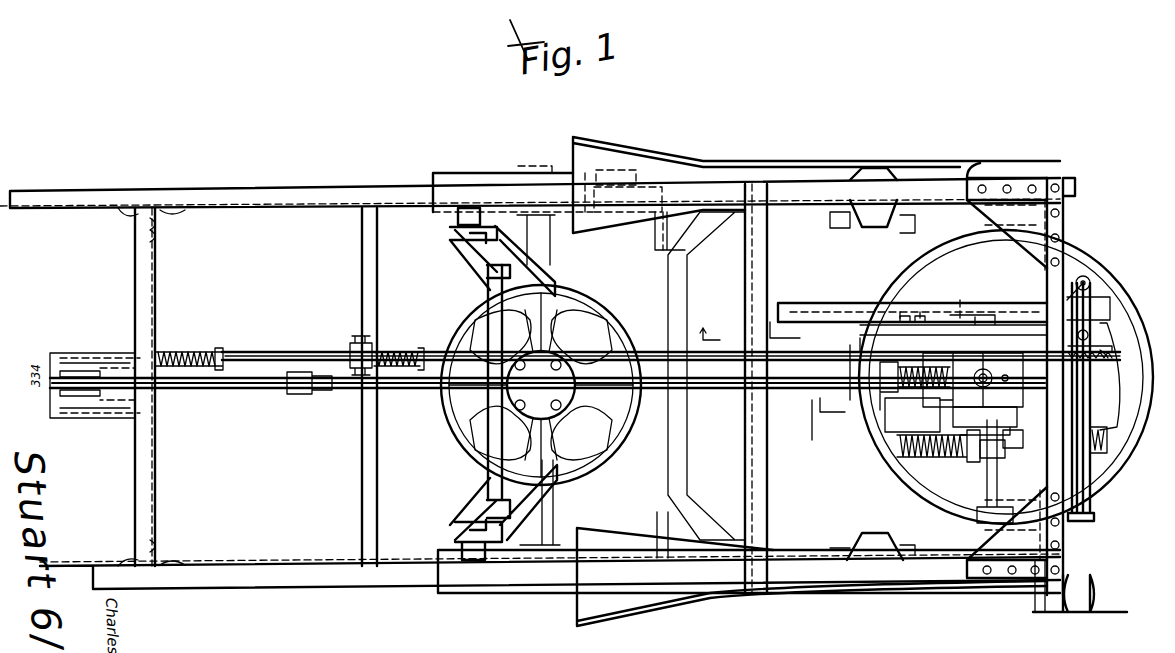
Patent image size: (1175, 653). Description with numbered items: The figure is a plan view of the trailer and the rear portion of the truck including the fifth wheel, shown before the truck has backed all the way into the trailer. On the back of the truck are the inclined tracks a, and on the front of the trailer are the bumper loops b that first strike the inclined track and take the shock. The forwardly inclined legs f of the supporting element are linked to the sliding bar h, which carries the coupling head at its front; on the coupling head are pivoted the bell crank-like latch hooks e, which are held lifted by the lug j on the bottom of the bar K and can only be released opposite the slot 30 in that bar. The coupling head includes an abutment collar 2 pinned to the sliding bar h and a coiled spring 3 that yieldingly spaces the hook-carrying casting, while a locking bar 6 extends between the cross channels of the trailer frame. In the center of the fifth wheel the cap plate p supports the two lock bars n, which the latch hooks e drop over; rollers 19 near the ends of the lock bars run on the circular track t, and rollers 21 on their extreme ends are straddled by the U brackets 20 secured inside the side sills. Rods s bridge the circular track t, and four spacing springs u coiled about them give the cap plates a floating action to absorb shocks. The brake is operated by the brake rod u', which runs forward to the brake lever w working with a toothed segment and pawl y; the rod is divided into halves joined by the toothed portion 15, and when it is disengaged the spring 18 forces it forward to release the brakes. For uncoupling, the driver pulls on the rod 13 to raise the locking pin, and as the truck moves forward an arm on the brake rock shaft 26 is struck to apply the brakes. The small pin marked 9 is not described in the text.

The tracks a is at (652, 625).
The forwardly inclined legs f is at (582, 497).
The sliding bar h is at (236, 392).
The brake rod u' is at (671, 331).
The spring 18 is at (200, 350).
The brake rock shaft 26 is at (378, 468).
The locking bar 6 is at (808, 425).
The toothed portion 15 is at (778, 330).
The bar K is at (806, 320).
The circular track t is at (888, 284).
The U brackets 20 is at (870, 222).
The rollers 19 is at (966, 176).
The bumper loops b is at (1074, 186).
The lug j is at (955, 295).
The slot 30 is at (990, 322).
The pin 9 is at (917, 317).
The coiled spring 3 is at (920, 400).
The latch hooks e is at (952, 421).
The abutment collar 2 is at (895, 380).
The spacing springs u is at (990, 465).
The rods s is at (1016, 447).
The cap plate p is at (962, 454).
The lock bars n is at (990, 470).
The rollers 21 is at (1040, 512).
The rod 13 is at (1095, 610).
The brake lever w is at (1108, 318).
The pawl y is at (1100, 367).